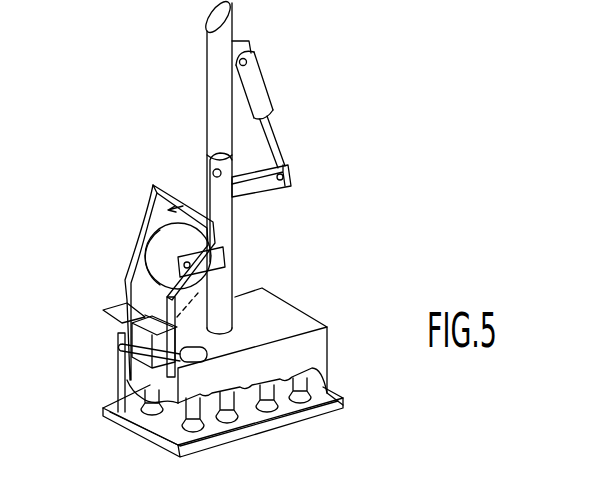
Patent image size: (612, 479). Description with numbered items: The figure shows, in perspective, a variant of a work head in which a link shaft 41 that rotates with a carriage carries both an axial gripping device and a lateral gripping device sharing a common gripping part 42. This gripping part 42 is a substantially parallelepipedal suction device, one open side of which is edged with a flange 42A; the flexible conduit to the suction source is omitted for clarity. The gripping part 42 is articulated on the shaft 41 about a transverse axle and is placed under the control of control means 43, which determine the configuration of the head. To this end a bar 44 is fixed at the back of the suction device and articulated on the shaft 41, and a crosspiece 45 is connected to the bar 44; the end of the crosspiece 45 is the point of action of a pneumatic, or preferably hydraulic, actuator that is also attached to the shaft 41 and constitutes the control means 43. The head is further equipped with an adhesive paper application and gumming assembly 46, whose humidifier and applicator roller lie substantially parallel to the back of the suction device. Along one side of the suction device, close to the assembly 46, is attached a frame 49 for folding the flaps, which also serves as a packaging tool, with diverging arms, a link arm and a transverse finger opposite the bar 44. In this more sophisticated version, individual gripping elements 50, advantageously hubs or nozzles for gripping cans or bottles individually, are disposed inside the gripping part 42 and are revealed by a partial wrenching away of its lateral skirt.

The link shaft 41 is at (206, 78).
The control means 43 is at (258, 92).
The crosspiece 45 is at (272, 186).
The bar 44 is at (232, 232).
The gripping part 42 is at (283, 317).
The individual gripping elements 50 is at (263, 405).
The flange 42A is at (343, 404).
The frame 49 is at (132, 231).
The adhesive paper application and gumming assembly 46 is at (144, 288).